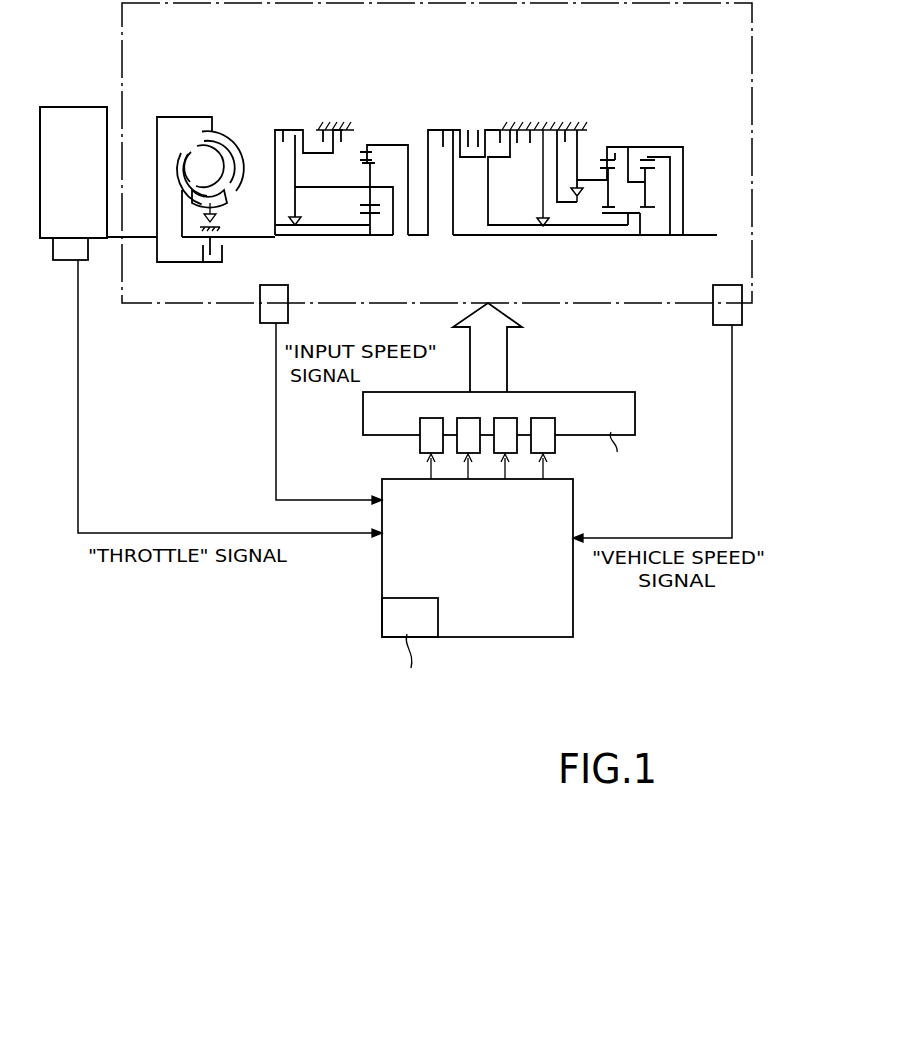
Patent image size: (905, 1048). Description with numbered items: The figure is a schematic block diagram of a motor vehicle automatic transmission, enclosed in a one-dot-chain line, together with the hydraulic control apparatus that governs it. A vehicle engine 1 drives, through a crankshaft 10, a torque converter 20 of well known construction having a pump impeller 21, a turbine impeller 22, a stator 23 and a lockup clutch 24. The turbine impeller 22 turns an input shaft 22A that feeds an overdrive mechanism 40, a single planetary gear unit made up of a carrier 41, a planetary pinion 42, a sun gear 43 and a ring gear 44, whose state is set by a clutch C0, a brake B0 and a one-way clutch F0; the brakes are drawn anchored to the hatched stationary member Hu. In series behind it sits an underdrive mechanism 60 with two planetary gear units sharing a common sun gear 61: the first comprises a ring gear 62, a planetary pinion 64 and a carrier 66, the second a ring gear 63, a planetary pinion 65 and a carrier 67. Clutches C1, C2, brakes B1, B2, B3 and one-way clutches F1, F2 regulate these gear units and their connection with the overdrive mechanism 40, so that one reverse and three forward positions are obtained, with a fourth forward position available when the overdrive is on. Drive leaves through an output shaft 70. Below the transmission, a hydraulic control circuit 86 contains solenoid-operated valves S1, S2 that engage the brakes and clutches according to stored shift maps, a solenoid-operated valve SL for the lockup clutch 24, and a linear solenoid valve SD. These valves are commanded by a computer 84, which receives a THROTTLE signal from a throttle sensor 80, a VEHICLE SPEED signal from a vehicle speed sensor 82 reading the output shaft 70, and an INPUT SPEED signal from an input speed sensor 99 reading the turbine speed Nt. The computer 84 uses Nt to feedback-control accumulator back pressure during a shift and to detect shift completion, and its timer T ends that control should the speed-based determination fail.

The vehicle engine 1 is at (72, 106).
The crankshaft 10 is at (137, 240).
The torque converter 20 is at (210, 163).
The pump impeller 21 is at (232, 140).
The turbine impeller 22 is at (204, 166).
The stator 23 is at (222, 200).
The input shaft 22A is at (245, 240).
The lockup clutch 24 is at (183, 262).
The overdrive mechanism 40 is at (385, 155).
The carrier 41 is at (374, 185).
The planetary pinion 42 is at (363, 169).
The sun gear 43 is at (377, 216).
The ring gear 44 is at (371, 144).
The underdrive mechanism 60 is at (627, 148).
The sun gear 61 is at (644, 216).
The ring gear 62 is at (640, 160).
The ring gear 63 is at (604, 157).
The planetary pinion 64 is at (646, 172).
The planetary pinion 65 is at (617, 216).
The carrier 66 is at (632, 184).
The carrier 67 is at (590, 180).
The output shaft 70 is at (696, 238).
The throttle sensor 80 is at (62, 262).
The vehicle speed sensor 82 is at (732, 327).
The computer 84 is at (540, 637).
The hydraulic control circuit 86 is at (503, 408).
The input speed sensor 99 is at (260, 312).
The clutch C0 is at (290, 128).
The one-way clutch F0 is at (303, 222).
The housing Hu is at (331, 124).
The brake B0 is at (350, 127).
The clutch C1 is at (449, 128).
The clutch C2 is at (470, 128).
The brake B1 is at (527, 128).
The brake B2 is at (554, 128).
The brake B3 is at (596, 128).
The one-way clutch F1 is at (539, 222).
The one-way clutch F2 is at (580, 200).
The solenoid-operated valve S1 is at (431, 448).
The solenoid-operated valve S2 is at (468, 448).
The solenoid-operated valve SL is at (505, 448).
The linear solenoid valve SD is at (543, 448).